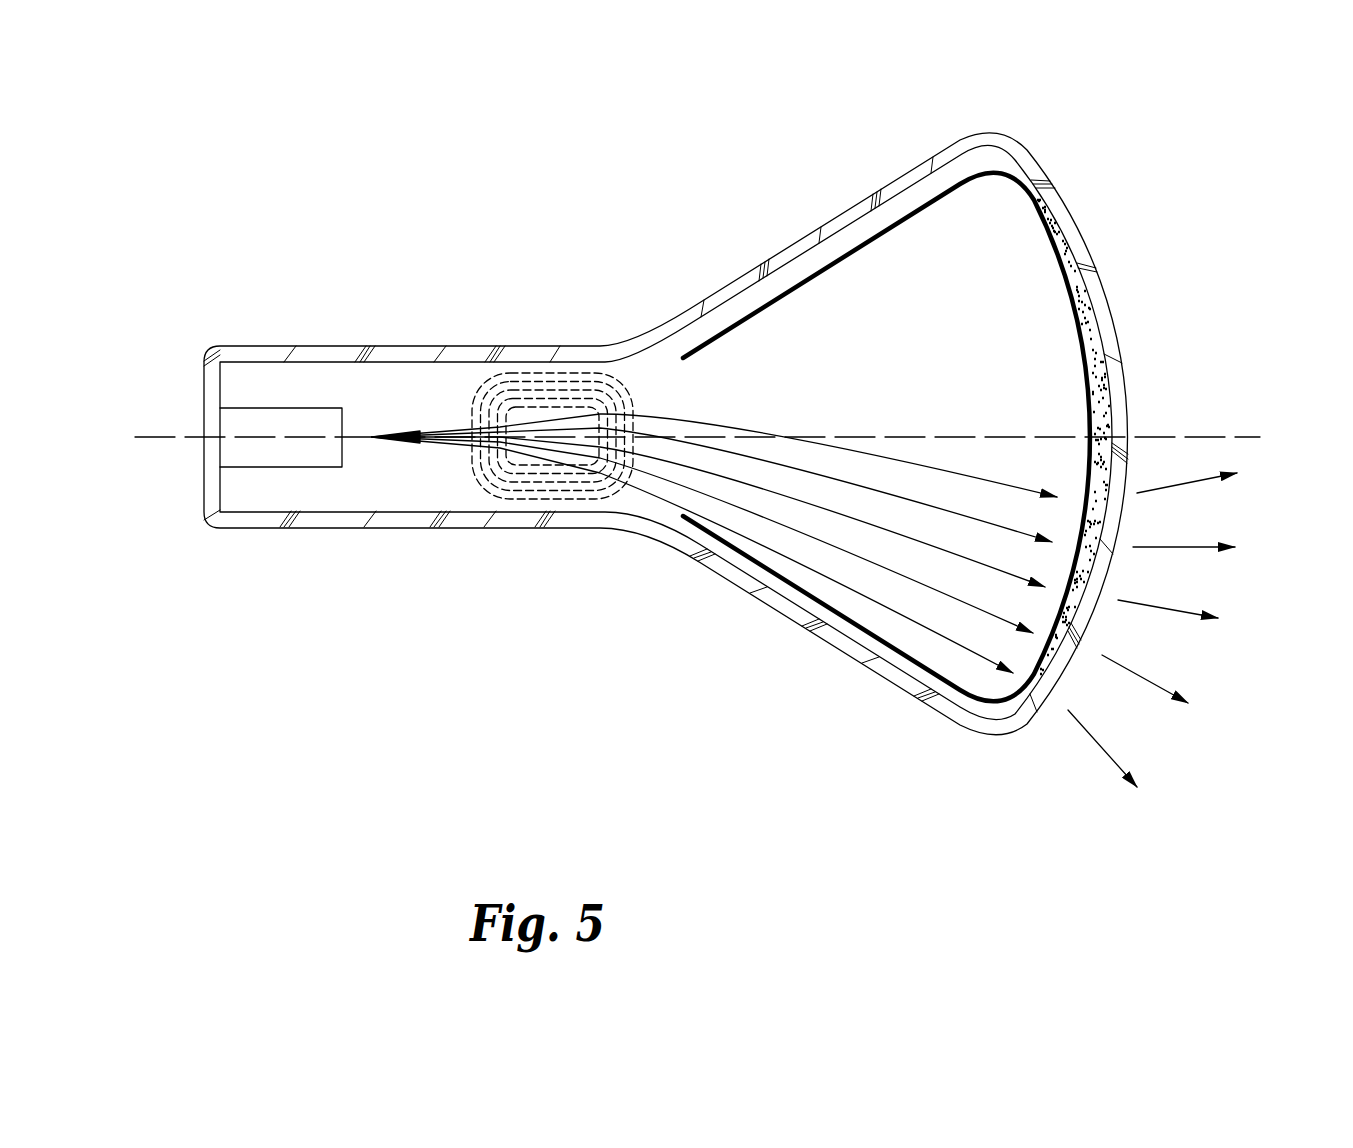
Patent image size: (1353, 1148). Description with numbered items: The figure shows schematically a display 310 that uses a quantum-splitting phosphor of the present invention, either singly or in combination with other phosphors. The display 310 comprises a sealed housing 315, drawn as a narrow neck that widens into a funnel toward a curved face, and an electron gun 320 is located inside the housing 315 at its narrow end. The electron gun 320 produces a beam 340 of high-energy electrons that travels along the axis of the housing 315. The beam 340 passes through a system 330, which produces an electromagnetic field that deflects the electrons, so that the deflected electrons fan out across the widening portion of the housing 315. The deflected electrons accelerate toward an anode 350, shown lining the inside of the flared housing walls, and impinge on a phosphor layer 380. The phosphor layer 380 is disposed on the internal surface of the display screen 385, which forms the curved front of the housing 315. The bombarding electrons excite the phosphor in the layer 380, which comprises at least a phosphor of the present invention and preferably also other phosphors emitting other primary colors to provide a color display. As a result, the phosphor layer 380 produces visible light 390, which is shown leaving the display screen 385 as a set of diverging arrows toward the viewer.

The display 310 is at (790, 161).
The sealed housing 315 is at (513, 518).
The electron gun 320 is at (242, 423).
The system 330 is at (527, 382).
The beam 340 is at (423, 445).
The anode 350 is at (800, 283).
The phosphor layer 380 is at (1047, 212).
The display screen 385 is at (1087, 257).
The visible light 390 is at (1165, 684).